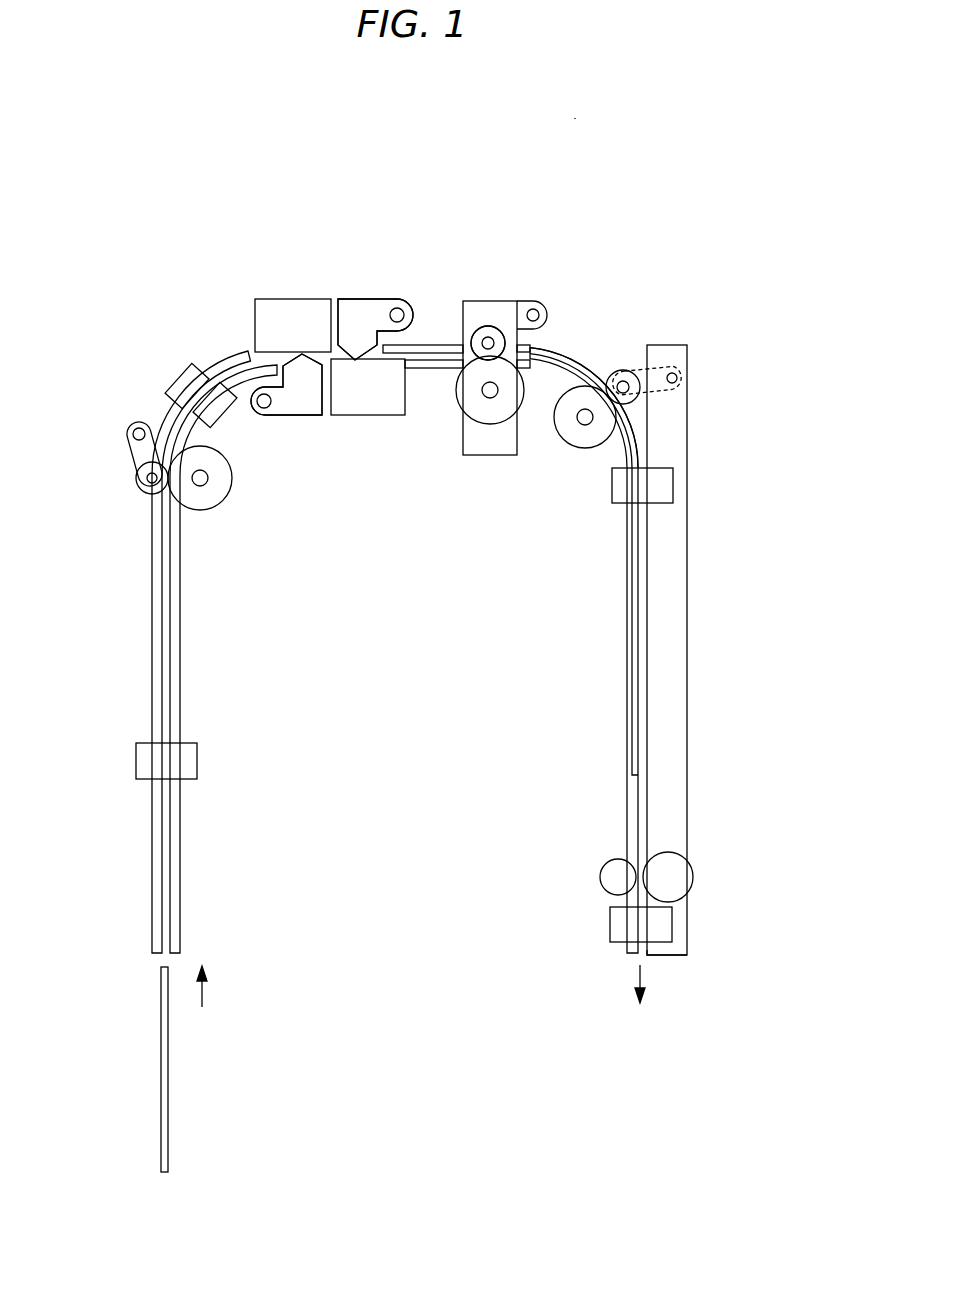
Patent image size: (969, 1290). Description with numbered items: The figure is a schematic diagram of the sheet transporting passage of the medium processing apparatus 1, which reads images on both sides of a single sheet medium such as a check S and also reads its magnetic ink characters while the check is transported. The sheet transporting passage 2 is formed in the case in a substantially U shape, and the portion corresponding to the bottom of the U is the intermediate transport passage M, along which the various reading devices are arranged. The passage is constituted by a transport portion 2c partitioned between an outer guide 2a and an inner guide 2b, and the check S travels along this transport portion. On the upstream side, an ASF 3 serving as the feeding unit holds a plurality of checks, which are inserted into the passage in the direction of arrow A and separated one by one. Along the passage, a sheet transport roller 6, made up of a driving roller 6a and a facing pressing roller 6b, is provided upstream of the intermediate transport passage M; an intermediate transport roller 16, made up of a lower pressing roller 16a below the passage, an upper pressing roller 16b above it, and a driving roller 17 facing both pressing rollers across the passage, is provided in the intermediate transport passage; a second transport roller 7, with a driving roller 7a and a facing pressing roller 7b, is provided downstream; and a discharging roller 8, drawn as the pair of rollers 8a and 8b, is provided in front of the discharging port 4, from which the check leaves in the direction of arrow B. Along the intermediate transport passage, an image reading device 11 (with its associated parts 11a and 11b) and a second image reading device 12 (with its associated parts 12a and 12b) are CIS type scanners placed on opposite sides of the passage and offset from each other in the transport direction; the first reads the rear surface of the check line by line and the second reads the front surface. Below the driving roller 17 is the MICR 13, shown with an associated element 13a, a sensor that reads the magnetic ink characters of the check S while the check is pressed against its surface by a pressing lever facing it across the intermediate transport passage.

The medium processing apparatus 1 is at (563, 188).
The sheet transporting passage 2 is at (48, 565).
The outer guide 2a is at (153, 570).
The inner guide 2b is at (175, 628).
The transport portion 2c is at (163, 593).
The ASF (Auto Sheet Feeder) 3 is at (190, 733).
The discharging port 4 is at (652, 968).
The sheet transport roller 6 is at (323, 508).
The driving roller 6a is at (220, 482).
The pressing roller 6b is at (170, 482).
The second transport roller 7 is at (605, 505).
The driving roller 7a is at (575, 432).
The pressing roller 7b is at (618, 402).
The discharging roller 8 is at (771, 898).
The discharge roller 8a is at (621, 893).
The discharge roller 8b is at (690, 885).
The image reading device 11 is at (293, 305).
The sensor lever 11a is at (302, 409).
The sensor lever 11b is at (304, 428).
The second image reading device 12 is at (385, 416).
The sensor lever 12a is at (358, 308).
The sensor lever 12b is at (370, 286).
The MICR (Magnetic Ink Character Reader) 13 is at (483, 447).
The drive roller 13a is at (493, 372).
The intermediate transport roller 16 is at (425, 212).
The lower pressing roller 16a is at (485, 330).
The upper pressing roller 16b is at (488, 343).
The driving roller 17 is at (520, 335).
The intermediate transport passage M is at (556, 356).
The check S is at (168, 1063).
The arrow A is at (213, 986).
The arrow B is at (629, 983).